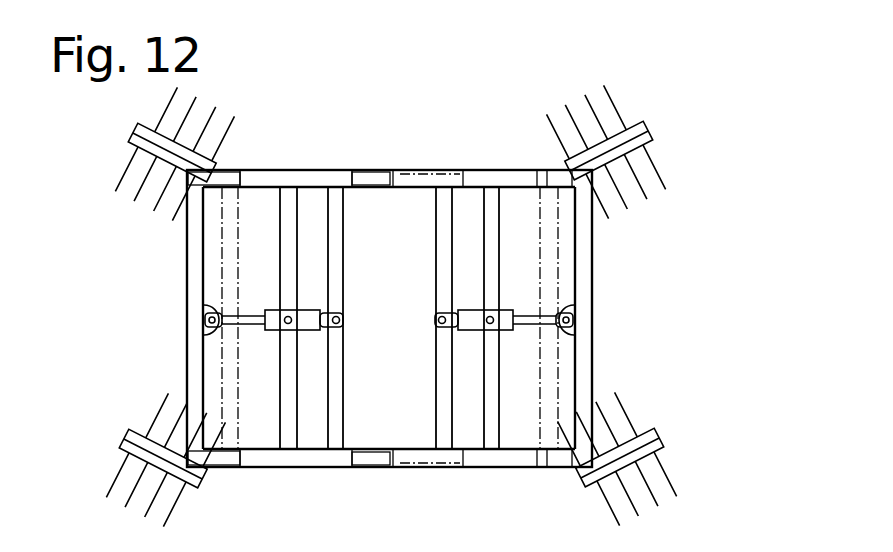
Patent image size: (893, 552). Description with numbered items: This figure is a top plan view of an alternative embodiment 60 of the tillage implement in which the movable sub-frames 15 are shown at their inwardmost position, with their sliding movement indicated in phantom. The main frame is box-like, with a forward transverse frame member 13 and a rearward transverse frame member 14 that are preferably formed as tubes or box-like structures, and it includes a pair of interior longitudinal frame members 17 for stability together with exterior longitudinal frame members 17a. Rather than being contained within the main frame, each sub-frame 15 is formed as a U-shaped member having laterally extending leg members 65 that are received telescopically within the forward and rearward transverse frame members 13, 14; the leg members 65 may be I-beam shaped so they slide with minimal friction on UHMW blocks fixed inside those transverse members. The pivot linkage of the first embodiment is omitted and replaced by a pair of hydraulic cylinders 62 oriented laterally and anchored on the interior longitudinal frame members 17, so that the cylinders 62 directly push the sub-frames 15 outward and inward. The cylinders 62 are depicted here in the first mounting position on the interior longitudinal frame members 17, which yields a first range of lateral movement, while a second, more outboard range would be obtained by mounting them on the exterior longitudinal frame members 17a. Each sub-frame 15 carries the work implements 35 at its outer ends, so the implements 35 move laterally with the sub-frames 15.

The alternative embodiment 60 is at (656, 95).
The forward transverse frame member 13 is at (408, 170).
The rearward transverse frame member 14 is at (377, 468).
The sub-frame 15 is at (187, 272).
The interior longitudinal frame member 17 is at (443, 240).
The exterior longitudinal frame member 17a is at (483, 412).
The work implement 35 is at (122, 150).
The hydraulic cylinder 62 is at (477, 317).
The leg member 65 is at (342, 186).